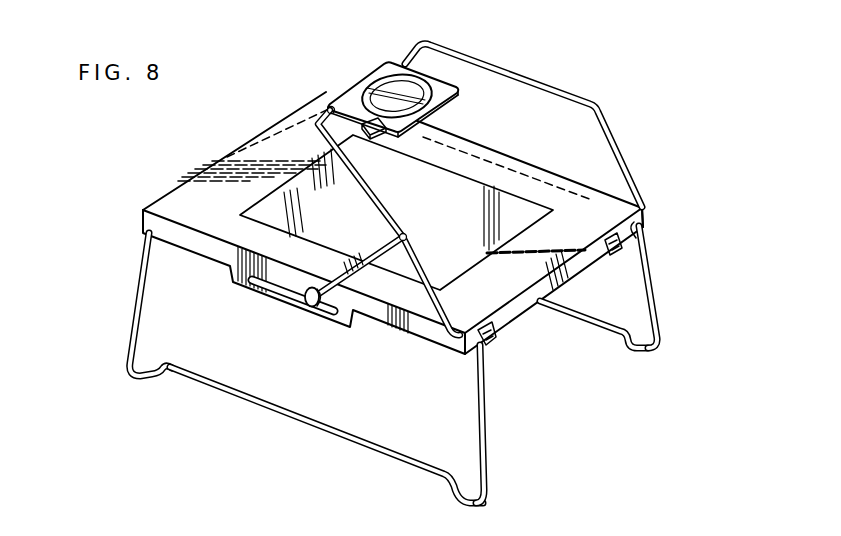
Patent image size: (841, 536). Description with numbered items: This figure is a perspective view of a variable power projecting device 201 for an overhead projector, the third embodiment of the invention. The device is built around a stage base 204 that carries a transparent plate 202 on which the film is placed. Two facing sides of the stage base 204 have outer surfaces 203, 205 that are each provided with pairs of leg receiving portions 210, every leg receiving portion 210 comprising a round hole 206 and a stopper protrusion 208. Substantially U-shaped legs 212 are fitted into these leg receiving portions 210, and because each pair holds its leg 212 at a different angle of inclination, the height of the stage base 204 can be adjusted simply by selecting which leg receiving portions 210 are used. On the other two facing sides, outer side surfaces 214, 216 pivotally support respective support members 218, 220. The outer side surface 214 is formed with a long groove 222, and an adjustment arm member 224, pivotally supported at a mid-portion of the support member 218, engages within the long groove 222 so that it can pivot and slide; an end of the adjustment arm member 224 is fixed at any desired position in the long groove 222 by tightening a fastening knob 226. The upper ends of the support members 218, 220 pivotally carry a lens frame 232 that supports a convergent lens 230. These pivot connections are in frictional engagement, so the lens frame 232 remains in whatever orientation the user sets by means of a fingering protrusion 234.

The variable power projecting device 201 is at (395, 260).
The transparent plate 202 is at (489, 197).
The outer surface 203 is at (533, 300).
The stage base 204 is at (645, 223).
The outer surface 205 is at (178, 190).
The round hole 206 is at (603, 243).
The stopper protrusion 208 is at (617, 258).
The leg receiving portion 210 is at (625, 245).
The U-shaped leg 212 is at (258, 412).
The outer side surface 214 is at (182, 237).
The outer side surface 216 is at (587, 192).
The support member 218 is at (272, 148).
The support member 220 is at (507, 72).
The long groove 222 is at (267, 284).
The adjustment arm member 224 is at (368, 255).
The fastening knob 226 is at (311, 307).
The convergent lens 230 is at (397, 80).
The lens frame 232 is at (377, 77).
The fingering protrusion 234 is at (372, 140).